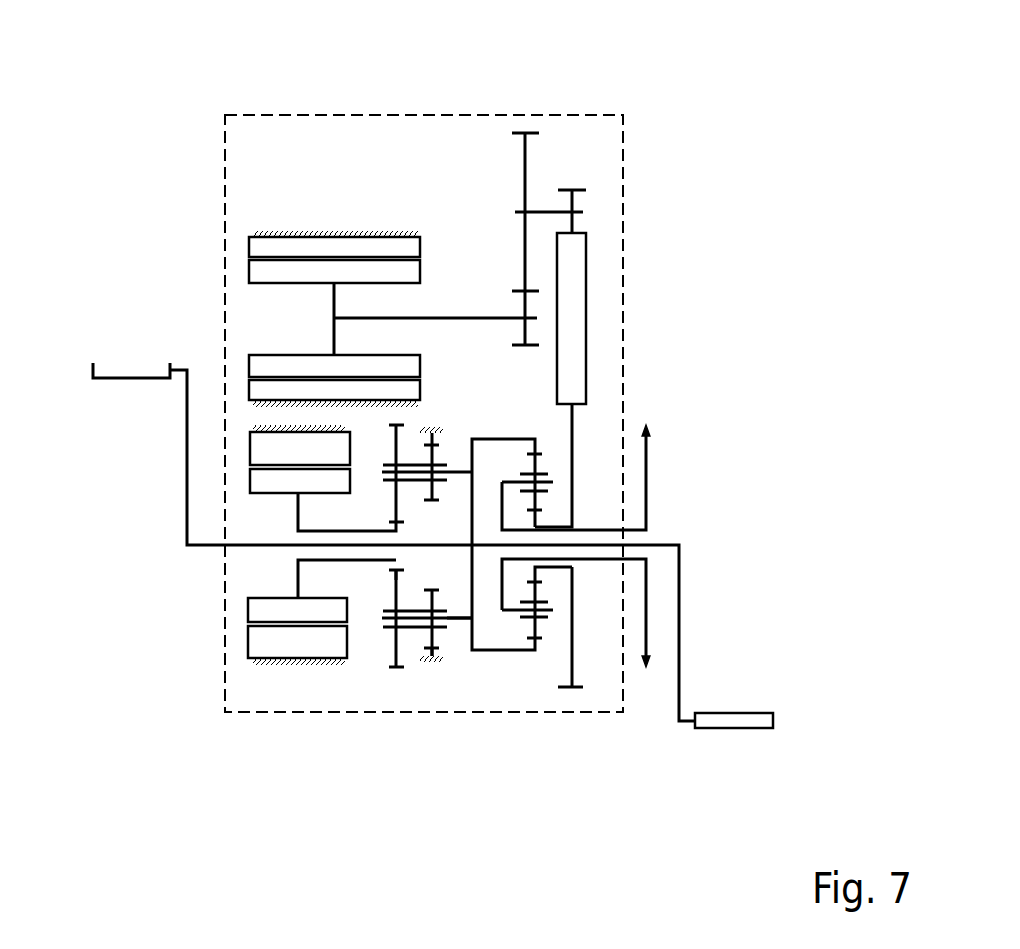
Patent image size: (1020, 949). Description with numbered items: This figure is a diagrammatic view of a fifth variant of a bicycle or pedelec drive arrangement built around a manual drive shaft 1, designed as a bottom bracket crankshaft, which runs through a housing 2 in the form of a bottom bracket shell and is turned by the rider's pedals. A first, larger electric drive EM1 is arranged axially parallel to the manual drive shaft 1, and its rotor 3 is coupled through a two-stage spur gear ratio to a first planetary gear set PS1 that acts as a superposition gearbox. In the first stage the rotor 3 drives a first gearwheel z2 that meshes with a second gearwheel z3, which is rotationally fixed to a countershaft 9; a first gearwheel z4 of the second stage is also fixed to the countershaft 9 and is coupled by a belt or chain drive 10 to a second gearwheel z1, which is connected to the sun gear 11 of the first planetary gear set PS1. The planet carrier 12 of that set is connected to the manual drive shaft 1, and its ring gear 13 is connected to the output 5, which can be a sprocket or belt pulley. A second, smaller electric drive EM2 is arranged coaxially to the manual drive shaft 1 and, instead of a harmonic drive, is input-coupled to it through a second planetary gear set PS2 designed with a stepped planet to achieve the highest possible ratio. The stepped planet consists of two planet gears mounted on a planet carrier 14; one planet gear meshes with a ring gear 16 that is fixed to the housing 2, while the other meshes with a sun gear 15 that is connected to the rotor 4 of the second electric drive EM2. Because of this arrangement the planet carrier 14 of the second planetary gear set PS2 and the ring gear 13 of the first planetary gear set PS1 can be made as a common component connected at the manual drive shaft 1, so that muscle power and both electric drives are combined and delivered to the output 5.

The manual drive shaft 1 is at (250, 547).
The housing 2 is at (225, 637).
The rotor 3 is at (457, 318).
The rotor 4 is at (298, 510).
The output 5 is at (646, 487).
The countershaft 9 is at (537, 210).
The belt or chain drive 10 is at (572, 303).
The sun gear 11 is at (553, 569).
The planet carrier 12 is at (502, 480).
The ring gear 13 is at (535, 440).
The planet carrier 14 is at (457, 620).
The sun gear 15 is at (393, 565).
The ring gear 16 is at (437, 653).
The second gearwheel of the second stage z1 is at (572, 668).
The first gearwheel of the first stage z2 is at (523, 312).
The second gearwheel of the first stage z3 is at (523, 167).
The first gearwheel of the second stage z4 is at (572, 202).
The first electric drive EM1 is at (300, 222).
The second electric drive EM2 is at (263, 673).
The first planetary gear set PS1 is at (535, 660).
The second planetary gear set PS2 is at (414, 673).